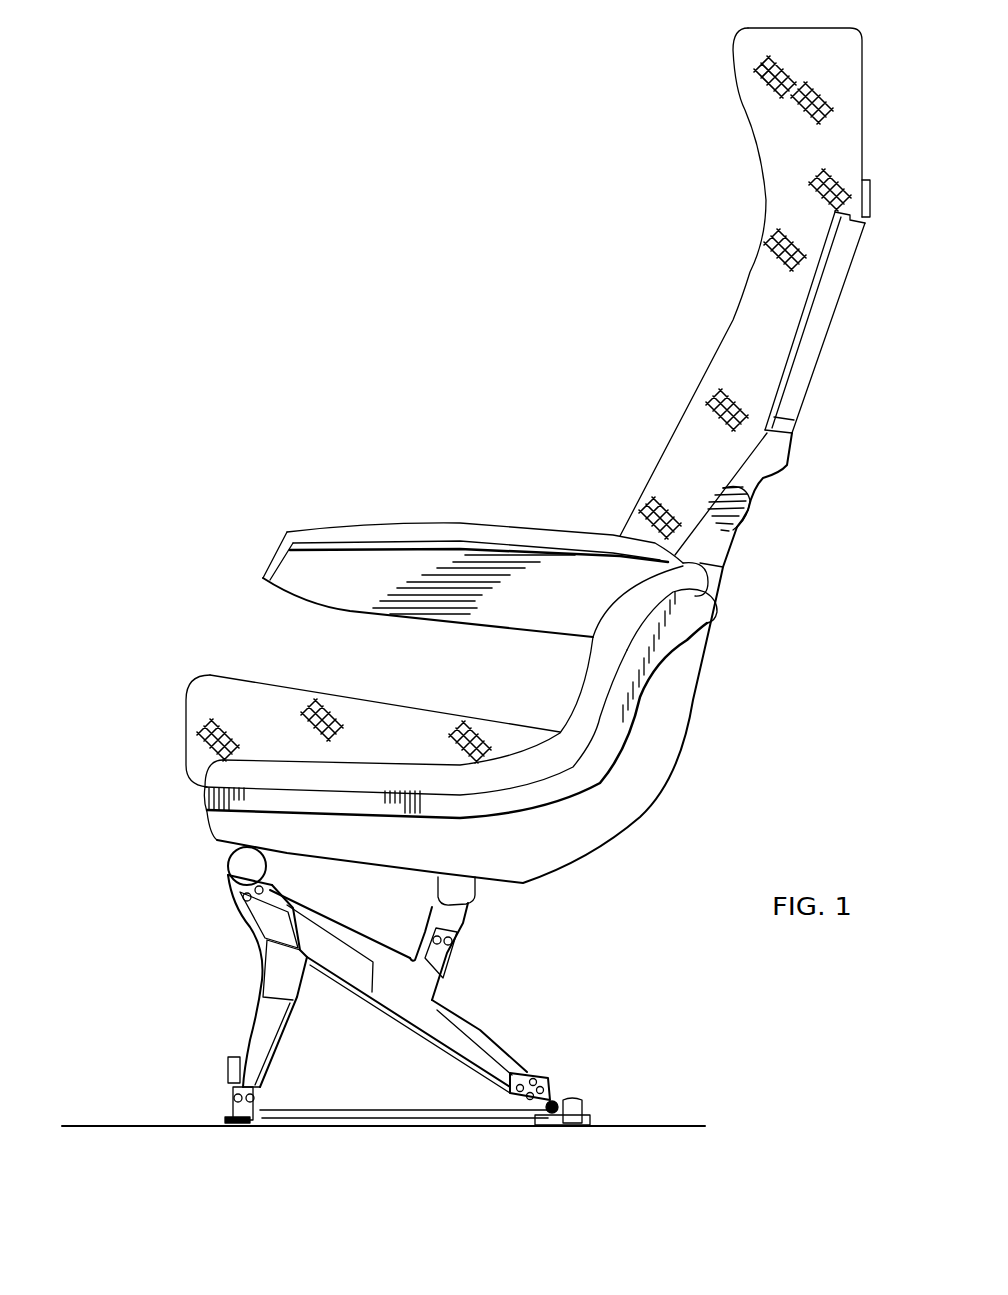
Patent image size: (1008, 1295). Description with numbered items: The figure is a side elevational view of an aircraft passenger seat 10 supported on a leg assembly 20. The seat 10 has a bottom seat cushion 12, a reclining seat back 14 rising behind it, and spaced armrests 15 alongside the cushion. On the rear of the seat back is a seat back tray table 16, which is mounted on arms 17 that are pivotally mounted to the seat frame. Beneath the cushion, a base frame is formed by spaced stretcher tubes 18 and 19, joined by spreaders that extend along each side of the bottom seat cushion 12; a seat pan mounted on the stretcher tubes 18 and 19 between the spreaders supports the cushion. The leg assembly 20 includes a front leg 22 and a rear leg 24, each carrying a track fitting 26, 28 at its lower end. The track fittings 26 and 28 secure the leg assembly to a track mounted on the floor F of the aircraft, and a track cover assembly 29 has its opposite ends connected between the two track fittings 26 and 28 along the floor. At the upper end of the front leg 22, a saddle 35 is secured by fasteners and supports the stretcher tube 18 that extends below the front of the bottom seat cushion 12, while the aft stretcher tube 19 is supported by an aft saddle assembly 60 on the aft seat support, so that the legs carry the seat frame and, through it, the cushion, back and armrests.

The aircraft passenger seat 10 is at (388, 434).
The bottom seat cushion 12 is at (200, 680).
The reclining seat back 14 is at (738, 295).
The armrests 15 is at (303, 575).
The seat back tray table 16 is at (833, 287).
The arms 17 is at (752, 505).
The stretcher tube 18 is at (225, 853).
The stretcher tube 19 is at (463, 883).
The leg assembly 20 is at (486, 1029).
The front leg 22 is at (265, 1010).
The rear leg 24 is at (488, 1055).
The track fitting 26 is at (228, 1107).
The track fitting 28 is at (582, 1103).
The track cover assembly 29 is at (430, 1117).
The saddle 35 is at (237, 903).
The aft saddle assembly 60 is at (470, 922).
The floor F is at (97, 1123).